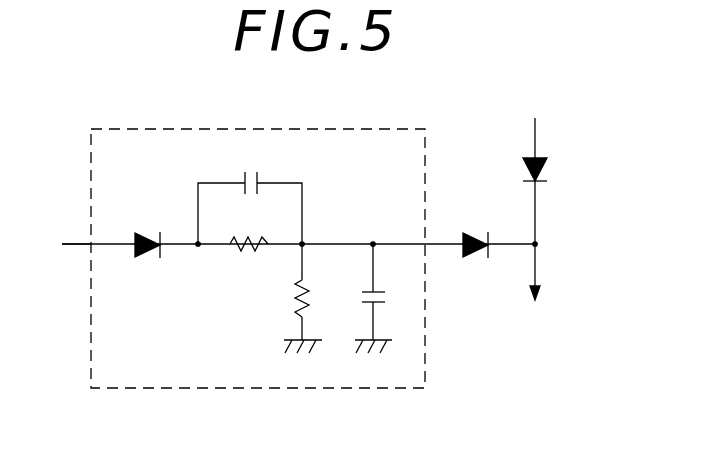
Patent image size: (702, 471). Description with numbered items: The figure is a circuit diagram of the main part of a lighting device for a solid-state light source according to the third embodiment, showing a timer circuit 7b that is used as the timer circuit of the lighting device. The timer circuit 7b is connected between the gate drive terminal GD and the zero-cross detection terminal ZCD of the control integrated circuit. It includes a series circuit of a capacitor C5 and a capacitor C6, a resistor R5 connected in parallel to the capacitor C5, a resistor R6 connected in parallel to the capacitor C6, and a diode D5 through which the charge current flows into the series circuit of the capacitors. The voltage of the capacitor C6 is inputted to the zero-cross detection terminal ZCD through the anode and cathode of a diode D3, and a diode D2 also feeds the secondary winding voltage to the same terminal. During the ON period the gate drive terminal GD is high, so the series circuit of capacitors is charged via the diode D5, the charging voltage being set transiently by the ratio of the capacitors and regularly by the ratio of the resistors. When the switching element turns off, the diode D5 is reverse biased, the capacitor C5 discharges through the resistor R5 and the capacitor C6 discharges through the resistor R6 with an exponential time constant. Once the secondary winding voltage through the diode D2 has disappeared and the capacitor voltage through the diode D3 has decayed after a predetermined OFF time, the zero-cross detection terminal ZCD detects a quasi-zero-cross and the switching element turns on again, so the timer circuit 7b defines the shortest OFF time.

The timer circuit 7b is at (346, 129).
The diode D5 is at (146, 232).
The capacitor C5 is at (249, 198).
The resistor R5 is at (249, 231).
The resistor R6 is at (291, 297).
The capacitor C6 is at (359, 297).
The diode D3 is at (474, 232).
The diode D2 is at (551, 181).
The gate drive terminal GD is at (54, 244).
The zero-cross detection terminal ZCD is at (532, 286).